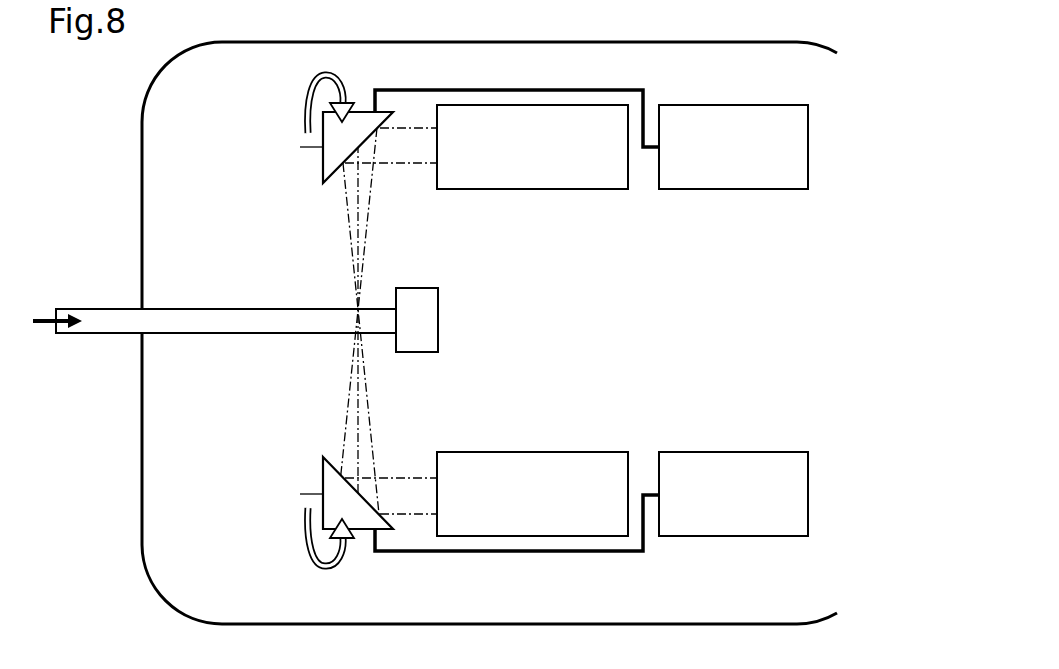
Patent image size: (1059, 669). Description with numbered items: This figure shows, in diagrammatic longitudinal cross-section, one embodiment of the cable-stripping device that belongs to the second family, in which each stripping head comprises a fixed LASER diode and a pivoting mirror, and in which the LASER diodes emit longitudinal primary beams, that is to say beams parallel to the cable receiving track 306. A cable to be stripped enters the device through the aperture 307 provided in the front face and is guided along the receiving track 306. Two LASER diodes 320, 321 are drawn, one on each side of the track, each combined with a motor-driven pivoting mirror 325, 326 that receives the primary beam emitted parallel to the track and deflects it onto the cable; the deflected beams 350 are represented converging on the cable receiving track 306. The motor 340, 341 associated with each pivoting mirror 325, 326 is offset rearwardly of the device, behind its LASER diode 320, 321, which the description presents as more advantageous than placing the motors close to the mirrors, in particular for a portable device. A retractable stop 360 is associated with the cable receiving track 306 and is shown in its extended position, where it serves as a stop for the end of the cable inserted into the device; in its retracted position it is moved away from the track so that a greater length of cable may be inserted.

The cable receiving track 306 is at (178, 340).
The aperture 307 is at (130, 345).
The LASER diode 320 is at (528, 182).
The LASER diode 321 is at (528, 458).
The pivoting mirror 325 is at (330, 157).
The pivoting mirror 326 is at (330, 482).
The motor 340 is at (733, 182).
The motor 341 is at (733, 458).
The beam path 350 is at (358, 217).
The retractable stop 360 is at (418, 342).